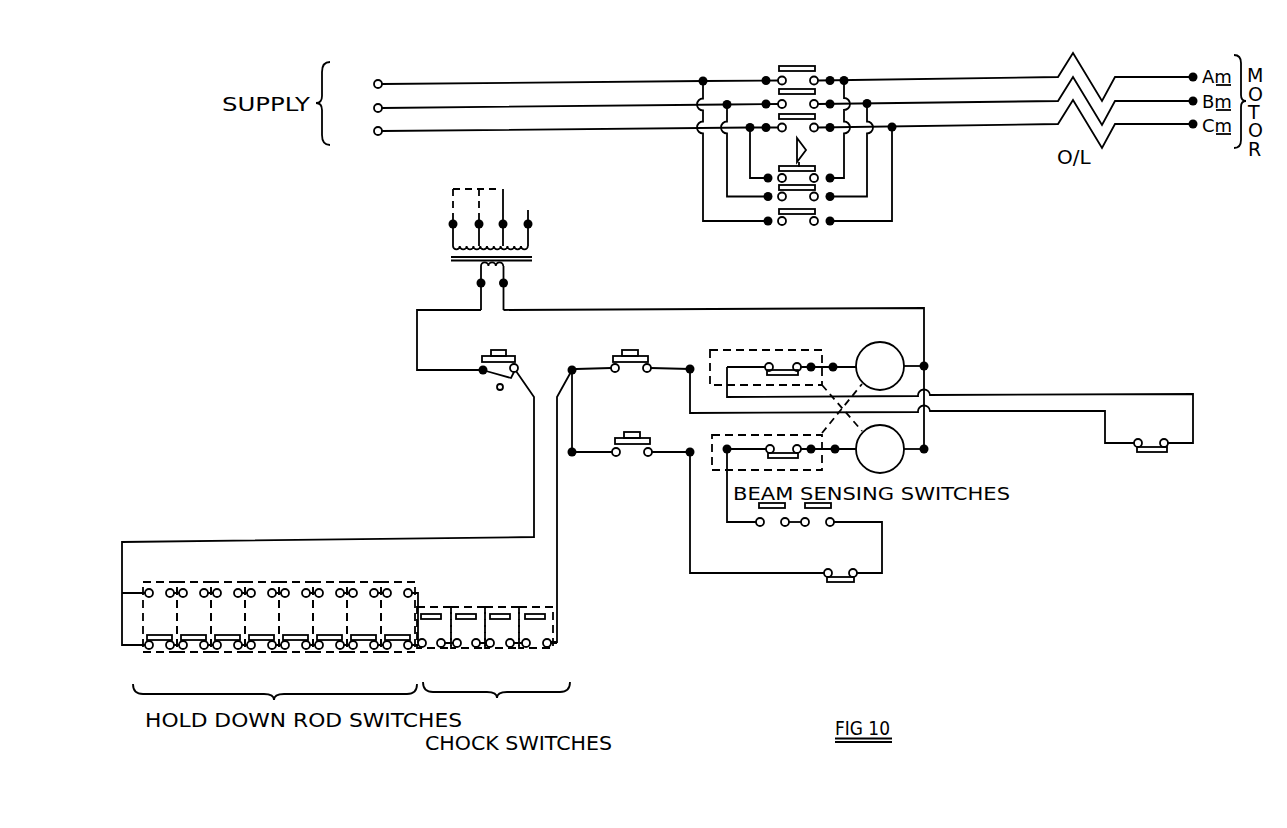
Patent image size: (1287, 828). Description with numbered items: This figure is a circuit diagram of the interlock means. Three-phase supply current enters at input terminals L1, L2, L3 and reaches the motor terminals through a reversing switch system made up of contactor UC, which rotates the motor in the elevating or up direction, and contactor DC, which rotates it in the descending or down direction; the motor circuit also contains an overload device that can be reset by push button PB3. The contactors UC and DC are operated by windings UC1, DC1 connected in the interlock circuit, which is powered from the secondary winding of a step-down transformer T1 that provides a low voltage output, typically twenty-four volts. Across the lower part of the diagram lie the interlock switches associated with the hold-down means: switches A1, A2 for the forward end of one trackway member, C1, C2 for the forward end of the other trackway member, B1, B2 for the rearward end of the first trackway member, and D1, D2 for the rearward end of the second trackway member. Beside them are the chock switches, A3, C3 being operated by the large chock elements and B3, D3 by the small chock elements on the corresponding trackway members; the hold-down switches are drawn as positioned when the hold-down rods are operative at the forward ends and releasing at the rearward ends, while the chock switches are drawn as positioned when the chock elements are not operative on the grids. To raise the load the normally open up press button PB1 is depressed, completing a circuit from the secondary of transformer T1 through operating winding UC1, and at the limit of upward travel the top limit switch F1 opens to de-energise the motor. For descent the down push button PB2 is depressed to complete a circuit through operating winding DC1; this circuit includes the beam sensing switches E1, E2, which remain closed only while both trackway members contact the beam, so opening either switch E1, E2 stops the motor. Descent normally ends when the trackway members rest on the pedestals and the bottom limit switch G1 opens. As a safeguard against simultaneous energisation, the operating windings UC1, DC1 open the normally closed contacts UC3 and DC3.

The input terminal L1 is at (360, 77).
The input terminal L2 is at (360, 101).
The input terminal L3 is at (360, 125).
The contactor UC is at (798, 85).
The contactor DC is at (799, 209).
The step-down transformer T1 is at (563, 249).
The push button PB3 is at (500, 370).
The up press button PB1 is at (633, 362).
The down push button PB2 is at (633, 443).
The normally closed contact DC3 is at (783, 360).
The operating winding UC1 is at (892, 366).
The normally closed contact UC3 is at (784, 459).
The operating winding DC1 is at (892, 449).
The top limit switch F1 is at (1152, 459).
The sensing switch E1 is at (772, 530).
The sensing switch E2 is at (817, 530).
The bottom limit switch G1 is at (851, 591).
The interlock switch A1 is at (160, 617).
The interlock switch A2 is at (194, 617).
The interlock switch B1 is at (228, 617).
The interlock switch B2 is at (262, 617).
The interlock switch C1 is at (296, 617).
The interlock switch C2 is at (330, 617).
The interlock switch D1 is at (364, 617).
The interlock switch D2 is at (398, 617).
The chock switch A3 is at (434, 646).
The chock switch B3 is at (468, 646).
The chock switch C3 is at (502, 646).
The chock switch D3 is at (536, 646).